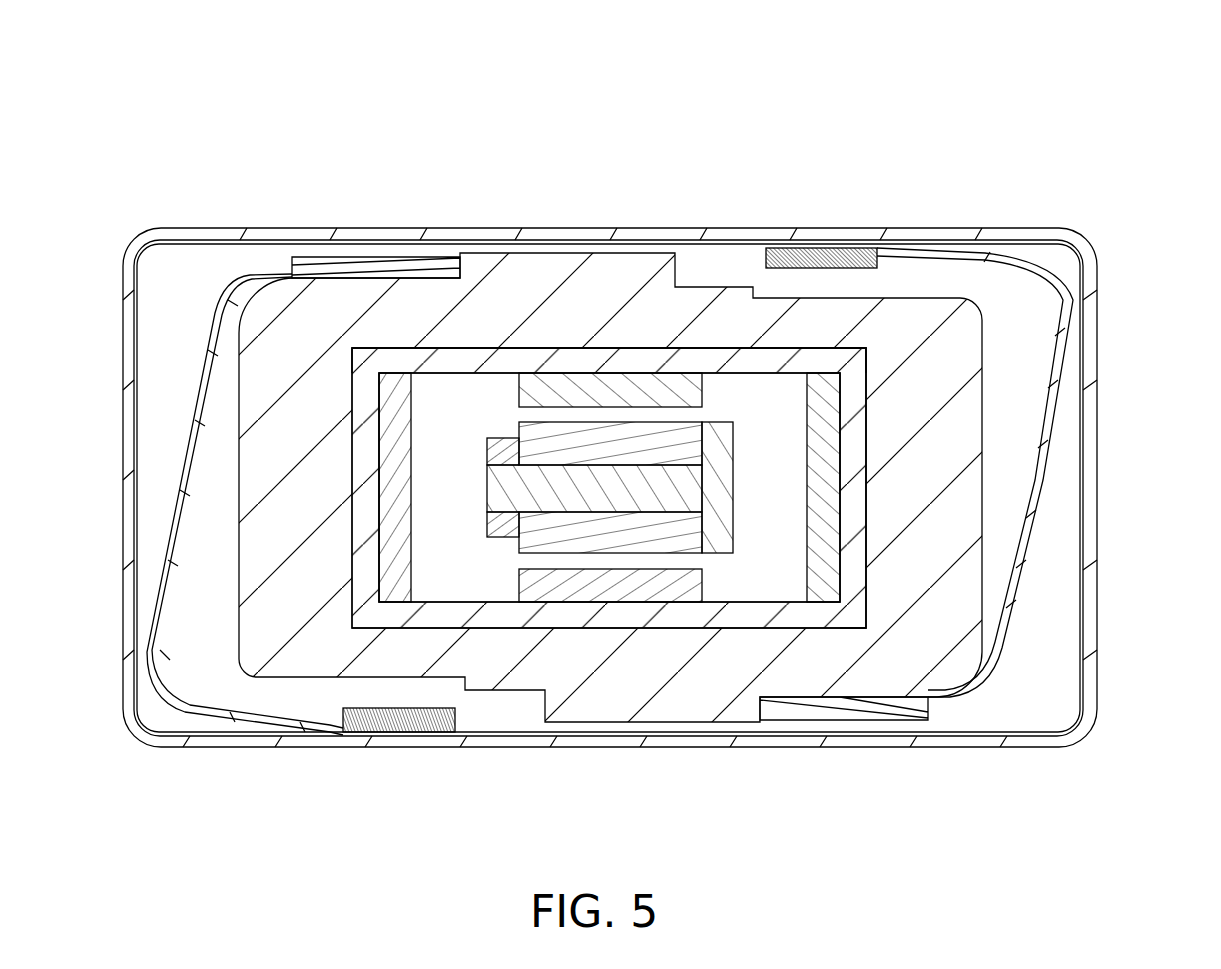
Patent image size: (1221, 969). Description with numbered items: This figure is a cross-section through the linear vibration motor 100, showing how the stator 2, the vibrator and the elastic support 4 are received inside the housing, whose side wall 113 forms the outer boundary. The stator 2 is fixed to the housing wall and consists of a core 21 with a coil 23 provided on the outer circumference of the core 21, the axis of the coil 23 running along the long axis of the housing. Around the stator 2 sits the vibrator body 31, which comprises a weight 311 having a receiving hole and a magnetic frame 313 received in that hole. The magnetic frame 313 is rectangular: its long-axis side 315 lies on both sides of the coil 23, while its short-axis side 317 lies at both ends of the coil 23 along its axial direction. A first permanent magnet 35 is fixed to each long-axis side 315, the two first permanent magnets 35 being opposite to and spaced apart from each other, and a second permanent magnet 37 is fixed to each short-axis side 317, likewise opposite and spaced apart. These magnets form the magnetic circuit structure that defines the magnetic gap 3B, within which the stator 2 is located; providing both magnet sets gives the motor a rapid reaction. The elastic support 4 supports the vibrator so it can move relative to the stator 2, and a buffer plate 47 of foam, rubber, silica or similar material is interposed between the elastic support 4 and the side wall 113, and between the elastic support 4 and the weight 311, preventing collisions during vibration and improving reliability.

The linear vibration motor 100 is at (592, 48).
The side wall 113 is at (1012, 235).
The stator 2 is at (592, 337).
The core 21 is at (501, 448).
The coil 23 is at (610, 447).
The magnetic gap 3B is at (468, 558).
The body 31 is at (610, 493).
The weight 311 is at (602, 678).
The magnetic frame 313 is at (735, 622).
The long-axis side 315 is at (770, 366).
The short-axis side 317 is at (857, 452).
The first permanent magnet 35 is at (641, 388).
The second permanent magnet 37 is at (402, 437).
The elastic support 4 is at (1053, 417).
The buffer plate 47 is at (862, 707).